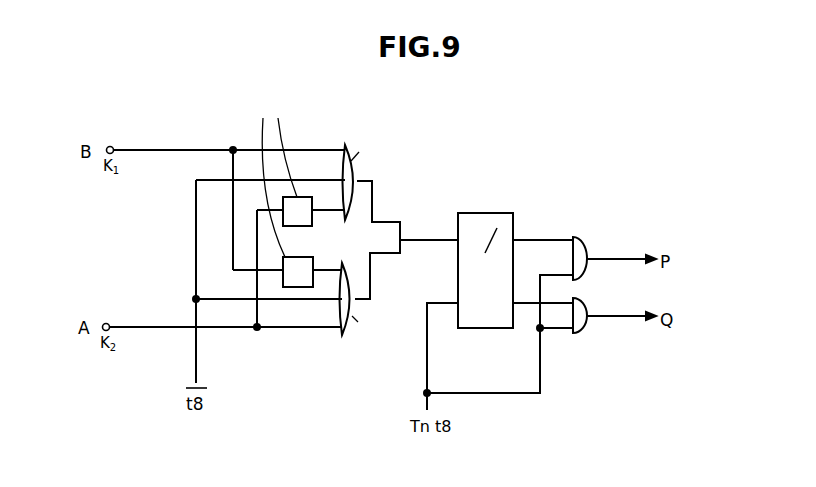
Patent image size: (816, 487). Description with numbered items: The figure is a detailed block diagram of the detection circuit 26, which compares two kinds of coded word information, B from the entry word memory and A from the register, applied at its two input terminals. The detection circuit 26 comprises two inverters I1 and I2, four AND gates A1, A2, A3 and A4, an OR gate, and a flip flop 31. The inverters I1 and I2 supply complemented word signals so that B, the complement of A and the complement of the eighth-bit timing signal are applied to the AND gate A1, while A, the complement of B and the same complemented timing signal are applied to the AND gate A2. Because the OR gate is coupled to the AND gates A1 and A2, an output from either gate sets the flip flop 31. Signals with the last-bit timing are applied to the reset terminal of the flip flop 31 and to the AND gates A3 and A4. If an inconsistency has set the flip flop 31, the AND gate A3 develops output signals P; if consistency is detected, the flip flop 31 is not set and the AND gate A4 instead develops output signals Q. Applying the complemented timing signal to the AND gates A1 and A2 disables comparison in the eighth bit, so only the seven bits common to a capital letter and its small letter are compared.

The detection circuit 26 is at (321, 413).
The flip flop 31 is at (479, 212).
The inverter I1 is at (314, 211).
The inverter I2 is at (312, 272).
The AND gate A1 is at (372, 191).
The AND gate A2 is at (364, 288).
The AND gate A3 is at (588, 250).
The AND gate A4 is at (586, 335).